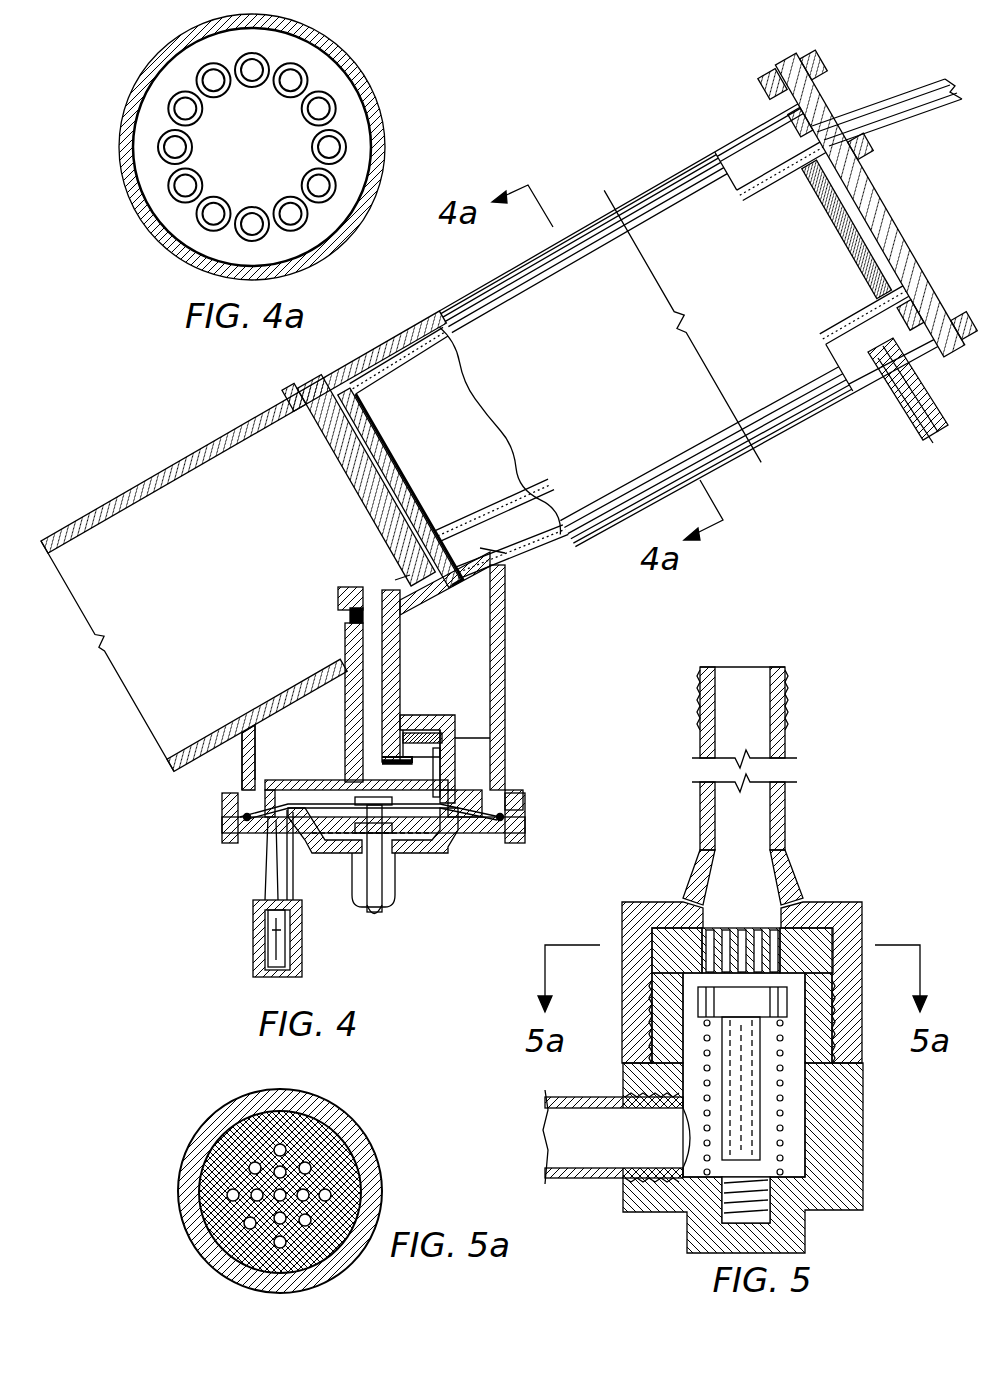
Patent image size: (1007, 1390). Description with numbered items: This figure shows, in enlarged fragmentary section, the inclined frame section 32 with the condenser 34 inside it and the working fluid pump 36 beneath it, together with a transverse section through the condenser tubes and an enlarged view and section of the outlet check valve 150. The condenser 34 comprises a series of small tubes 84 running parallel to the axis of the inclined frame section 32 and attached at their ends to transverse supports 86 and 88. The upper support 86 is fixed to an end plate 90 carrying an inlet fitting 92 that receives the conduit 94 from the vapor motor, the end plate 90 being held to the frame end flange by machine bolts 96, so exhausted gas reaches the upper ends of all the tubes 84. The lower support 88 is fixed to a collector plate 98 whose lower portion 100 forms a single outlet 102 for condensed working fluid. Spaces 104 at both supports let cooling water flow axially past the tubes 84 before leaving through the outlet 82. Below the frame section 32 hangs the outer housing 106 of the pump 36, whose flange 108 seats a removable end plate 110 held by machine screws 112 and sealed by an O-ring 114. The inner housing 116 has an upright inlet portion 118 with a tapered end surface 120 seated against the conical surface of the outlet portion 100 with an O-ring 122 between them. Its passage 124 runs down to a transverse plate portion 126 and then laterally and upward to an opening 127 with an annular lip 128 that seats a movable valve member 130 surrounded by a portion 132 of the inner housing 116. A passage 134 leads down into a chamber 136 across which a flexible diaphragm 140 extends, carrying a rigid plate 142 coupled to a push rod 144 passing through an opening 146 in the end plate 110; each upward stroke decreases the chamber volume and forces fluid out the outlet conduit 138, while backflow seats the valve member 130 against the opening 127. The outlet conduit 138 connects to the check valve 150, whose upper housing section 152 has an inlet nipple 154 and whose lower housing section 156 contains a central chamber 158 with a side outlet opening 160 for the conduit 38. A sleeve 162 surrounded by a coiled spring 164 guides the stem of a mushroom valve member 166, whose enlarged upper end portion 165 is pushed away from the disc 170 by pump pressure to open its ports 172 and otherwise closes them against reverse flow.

In FIG. 4A, the inclined frame section 32 is at (380, 70).
In FIG. 4, the inclined frame section 32 is at (224, 736).
In FIG. 4, the condenser 34 is at (520, 570).
In FIG. 4, the working fluid pump 36 is at (510, 718).
In FIG. 5, the conduit 38 is at (608, 1178).
In FIG. 4, the outlet 82 is at (920, 432).
In FIG. 4A, the condenser tubes 84 is at (203, 170).
In FIG. 4, the condenser tubes 84 is at (457, 385).
In FIG. 4, the upper transverse support 86 is at (850, 230).
In FIG. 4, the lower transverse support 88 is at (408, 508).
In FIG. 4, the end plate 90 is at (872, 225).
In FIG. 4, the inlet fitting 92 is at (862, 147).
In FIG. 4, the conduit 94 is at (866, 100).
In FIG. 4, the machine bolts 96 is at (803, 78).
In FIG. 4, the collector plate 98 is at (352, 472).
In FIG. 4, the lower portion 100 is at (340, 592).
In FIG. 4, the outlet 102 is at (385, 570).
In FIG. 4, the spaces 104 is at (322, 393).
In FIG. 4, the outer housing 106 is at (505, 662).
In FIG. 4, the flange 108 is at (524, 800).
In FIG. 4, the end plate 110 is at (238, 840).
In FIG. 4, the machine screws 112 is at (518, 840).
In FIG. 4, the O-ring 114 is at (527, 828).
In FIG. 4, the inner housing 116 is at (283, 775).
In FIG. 4, the upright inlet portion 118 is at (346, 650).
In FIG. 4, the tapered end surface 120 is at (415, 606).
In FIG. 4, the O-ring 122 is at (349, 615).
In FIG. 4, the passage 124 is at (385, 690).
In FIG. 4, the transverse plate portion 126 is at (395, 782).
In FIG. 4, the opening 127 is at (390, 758).
In FIG. 4, the annular lip 128 is at (442, 752).
In FIG. 4, the movable valve member 130 is at (426, 731).
In FIG. 4, the inner housing portion 132 is at (448, 712).
In FIG. 4, the passage 134 is at (450, 740).
In FIG. 4, the chamber 136 is at (445, 785).
In FIG. 4, the outlet conduit 138 is at (280, 812).
In FIG. 4, the flexible diaphragm 140 is at (415, 850).
In FIG. 4, the rigid plate 142 is at (405, 870).
In FIG. 4, the push rod 144 is at (372, 912).
In FIG. 4, the opening 146 is at (352, 872).
In FIG. 4, the check valve 150 is at (252, 925).
In FIG. 5, the check valve 150 is at (830, 878).
In FIG. 5, the upper housing section 152 is at (862, 915).
In FIG. 5A, the upper housing section 152 is at (230, 1113).
In FIG. 5, the inlet nipple 154 is at (778, 832).
In FIG. 5, the lower housing section 156 is at (862, 1140).
In FIG. 5, the central chamber 158 is at (800, 1095).
In FIG. 5, the side outlet opening 160 is at (612, 1158).
In FIG. 5, the sleeve 162 is at (735, 1165).
In FIG. 5, the coiled spring 164 is at (705, 1118).
In FIG. 5, the plunger head 165 is at (745, 1014).
In FIG. 5, the mushroom valve member 166 is at (735, 1050).
In FIG. 5, the disc 170 is at (800, 928).
In FIG. 5A, the disc 170 is at (350, 1160).
In FIG. 5, the ports 172 is at (740, 930).
In FIG. 5A, the ports 172 is at (310, 1170).